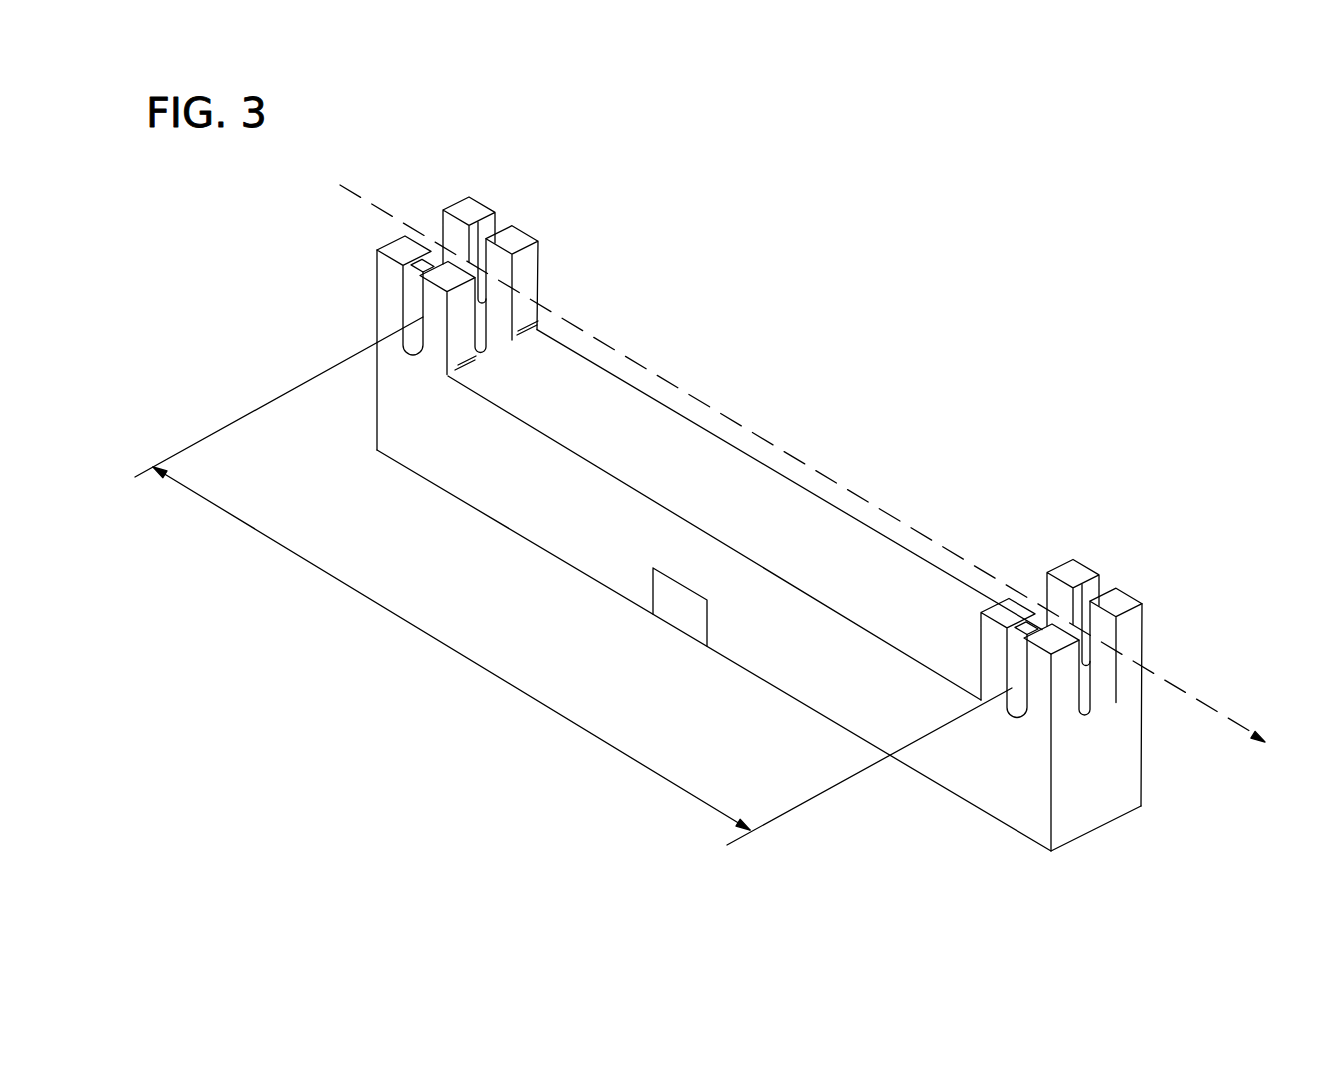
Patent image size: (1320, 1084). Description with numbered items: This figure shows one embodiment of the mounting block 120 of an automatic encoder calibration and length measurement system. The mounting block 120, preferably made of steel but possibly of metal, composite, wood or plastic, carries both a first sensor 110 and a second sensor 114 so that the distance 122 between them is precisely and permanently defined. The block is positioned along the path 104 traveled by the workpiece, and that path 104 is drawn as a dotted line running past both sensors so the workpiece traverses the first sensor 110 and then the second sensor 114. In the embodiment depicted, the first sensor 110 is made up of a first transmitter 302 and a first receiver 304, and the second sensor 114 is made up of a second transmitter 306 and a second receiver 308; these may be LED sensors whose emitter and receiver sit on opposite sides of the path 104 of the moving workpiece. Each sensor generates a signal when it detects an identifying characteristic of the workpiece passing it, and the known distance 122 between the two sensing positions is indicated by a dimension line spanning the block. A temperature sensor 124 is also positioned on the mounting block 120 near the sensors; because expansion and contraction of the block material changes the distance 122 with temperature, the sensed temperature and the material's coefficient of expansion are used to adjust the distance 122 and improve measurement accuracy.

The path 104 is at (1195, 700).
The first sensor 110 is at (466, 224).
The second sensor 114 is at (1085, 600).
The mounting block 120 is at (1063, 654).
The distance 122 is at (382, 612).
The temperature sensor 124 is at (682, 606).
The first transmitter 302 is at (423, 307).
The first receiver 304 is at (497, 223).
The second transmitter 306 is at (1027, 668).
The second receiver 308 is at (1100, 588).